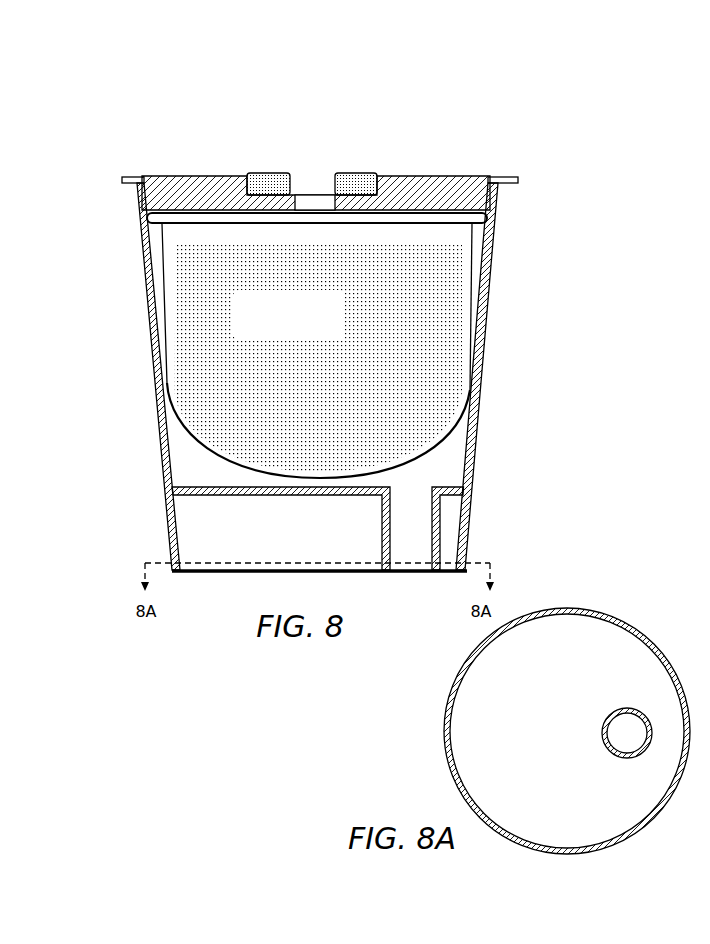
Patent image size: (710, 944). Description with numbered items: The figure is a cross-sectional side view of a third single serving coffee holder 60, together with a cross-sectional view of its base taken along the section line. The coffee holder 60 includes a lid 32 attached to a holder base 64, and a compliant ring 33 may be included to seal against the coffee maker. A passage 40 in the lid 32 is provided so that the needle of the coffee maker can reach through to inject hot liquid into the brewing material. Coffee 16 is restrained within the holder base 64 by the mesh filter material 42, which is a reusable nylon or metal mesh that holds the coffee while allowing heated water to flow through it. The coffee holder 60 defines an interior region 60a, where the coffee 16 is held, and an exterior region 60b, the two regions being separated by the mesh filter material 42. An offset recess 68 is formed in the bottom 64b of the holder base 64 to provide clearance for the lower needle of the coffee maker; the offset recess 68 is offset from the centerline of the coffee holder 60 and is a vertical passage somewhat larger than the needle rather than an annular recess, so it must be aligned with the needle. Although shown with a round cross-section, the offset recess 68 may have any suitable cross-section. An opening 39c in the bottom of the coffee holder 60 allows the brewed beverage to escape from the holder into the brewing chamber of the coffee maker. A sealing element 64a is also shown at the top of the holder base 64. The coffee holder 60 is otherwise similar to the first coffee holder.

In FIG. 8, the third single serving coffee holder 60 is at (274, 128).
In FIG. 8, the interior region 60a is at (191, 230).
In FIG. 8, the exterior region 60b is at (101, 345).
In FIG. 8, the lid 32 is at (440, 185).
In FIG. 8, the compliant ring 33 is at (262, 172).
In FIG. 8, the passage 40 is at (325, 200).
In FIG. 8, the holder base 64 is at (486, 357).
In FIG. 8A, the holder base 64 is at (567, 731).
In FIG. 8, the sealing ring 64a is at (500, 217).
In FIG. 8, the bottom 64b is at (470, 538).
In FIG. 8, the mesh filter material 42 is at (468, 425).
In FIG. 8, the coffee 16 is at (290, 323).
In FIG. 8, the opening 39c is at (398, 510).
In FIG. 8A, the opening 39c is at (628, 744).
In FIG. 8, the offset recess 68 is at (408, 552).
In FIG. 8A, the offset recess 68 is at (625, 729).